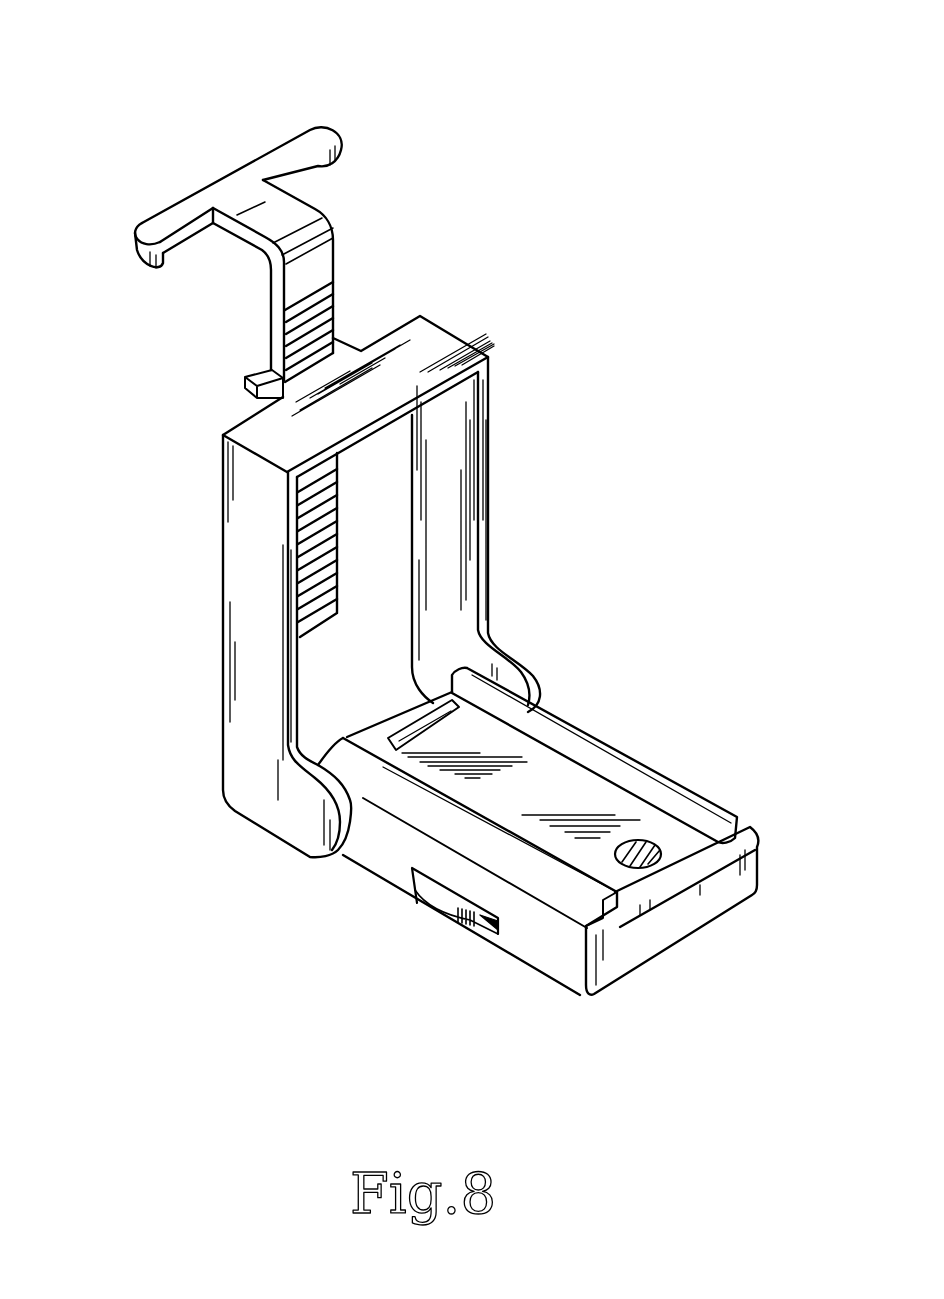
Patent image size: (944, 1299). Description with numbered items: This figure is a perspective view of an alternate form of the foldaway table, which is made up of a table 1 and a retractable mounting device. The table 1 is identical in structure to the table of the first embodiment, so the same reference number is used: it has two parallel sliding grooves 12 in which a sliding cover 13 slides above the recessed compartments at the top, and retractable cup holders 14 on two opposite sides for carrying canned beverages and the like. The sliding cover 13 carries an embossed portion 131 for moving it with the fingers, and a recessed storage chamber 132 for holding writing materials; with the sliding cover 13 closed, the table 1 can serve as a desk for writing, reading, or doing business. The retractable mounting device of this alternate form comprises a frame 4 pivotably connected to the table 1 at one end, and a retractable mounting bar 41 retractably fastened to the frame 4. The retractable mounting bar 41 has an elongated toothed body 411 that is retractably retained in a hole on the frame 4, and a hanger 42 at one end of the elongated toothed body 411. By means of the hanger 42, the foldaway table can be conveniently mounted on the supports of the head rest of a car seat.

The table 1 is at (686, 927).
The sliding grooves 12 is at (614, 918).
The sliding cover 13 is at (553, 788).
The embossed portion 131 is at (655, 843).
The recessed storage chamber 132 is at (423, 722).
The retractable cup holder 14 is at (430, 910).
The frame 4 is at (247, 560).
The retractable mounting bar 41 is at (283, 213).
The elongated toothed body 411 is at (330, 302).
The hanger 42 is at (328, 146).